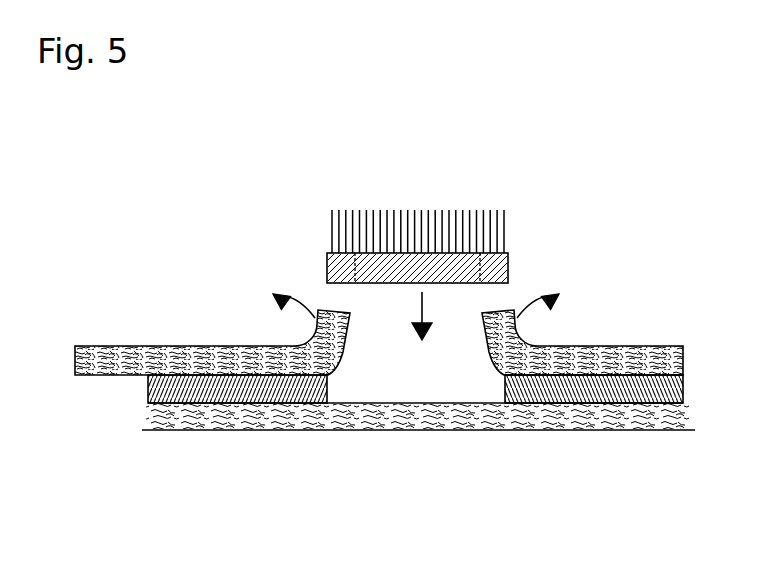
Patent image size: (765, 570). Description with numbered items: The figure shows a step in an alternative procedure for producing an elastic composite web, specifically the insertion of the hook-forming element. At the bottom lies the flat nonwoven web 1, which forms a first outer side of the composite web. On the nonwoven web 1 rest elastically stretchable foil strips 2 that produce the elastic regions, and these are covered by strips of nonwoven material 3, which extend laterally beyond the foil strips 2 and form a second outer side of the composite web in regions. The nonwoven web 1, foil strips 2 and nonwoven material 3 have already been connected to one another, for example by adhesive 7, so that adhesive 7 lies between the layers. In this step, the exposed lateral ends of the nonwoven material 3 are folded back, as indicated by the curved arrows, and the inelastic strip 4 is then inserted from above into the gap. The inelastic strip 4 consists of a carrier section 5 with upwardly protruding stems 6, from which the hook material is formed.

The nonwoven web 1 is at (425, 423).
The foil strips 2 is at (667, 388).
The nonwoven material 3 is at (583, 355).
The inelastic strip 4 is at (513, 272).
The carrier section 5 is at (475, 253).
The stems 6 is at (337, 240).
The adhesive 7 is at (643, 378).